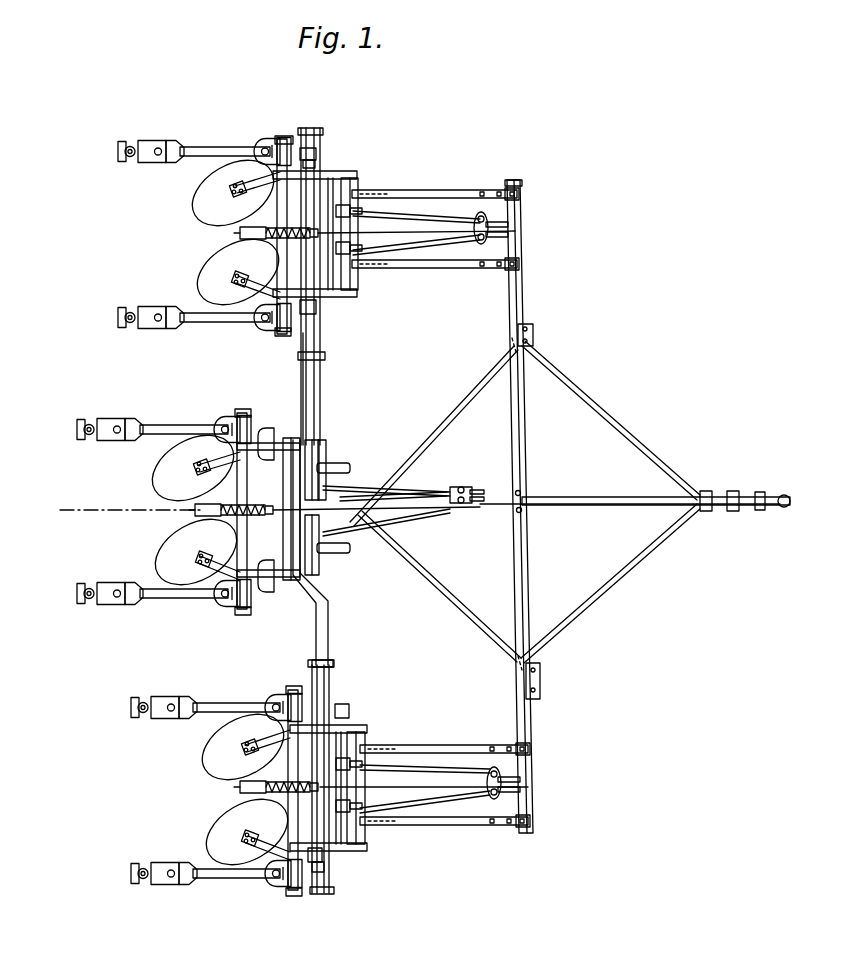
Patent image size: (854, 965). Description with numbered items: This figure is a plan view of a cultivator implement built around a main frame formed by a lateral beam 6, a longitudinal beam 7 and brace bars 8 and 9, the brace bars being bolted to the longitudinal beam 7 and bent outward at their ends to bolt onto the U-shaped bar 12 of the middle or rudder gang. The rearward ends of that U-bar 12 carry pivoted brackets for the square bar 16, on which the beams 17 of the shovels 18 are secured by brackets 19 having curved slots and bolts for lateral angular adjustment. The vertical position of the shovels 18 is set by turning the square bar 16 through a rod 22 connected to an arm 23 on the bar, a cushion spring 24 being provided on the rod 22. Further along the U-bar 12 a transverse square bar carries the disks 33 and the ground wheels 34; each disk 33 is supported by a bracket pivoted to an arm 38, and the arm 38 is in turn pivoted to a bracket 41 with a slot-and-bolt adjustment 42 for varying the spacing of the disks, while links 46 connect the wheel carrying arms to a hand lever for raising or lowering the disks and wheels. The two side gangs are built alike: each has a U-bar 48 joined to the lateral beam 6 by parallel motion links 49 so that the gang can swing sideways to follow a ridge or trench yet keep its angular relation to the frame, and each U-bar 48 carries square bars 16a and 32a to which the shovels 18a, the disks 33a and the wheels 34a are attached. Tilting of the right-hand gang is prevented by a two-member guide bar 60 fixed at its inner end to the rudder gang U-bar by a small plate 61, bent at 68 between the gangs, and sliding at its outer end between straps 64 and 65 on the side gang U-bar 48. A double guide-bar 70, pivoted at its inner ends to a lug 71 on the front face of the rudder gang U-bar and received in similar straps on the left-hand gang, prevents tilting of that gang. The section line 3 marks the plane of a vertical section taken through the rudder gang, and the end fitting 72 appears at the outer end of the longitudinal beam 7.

The section line 3— 3 is at (74, 512).
The lateral beam 6 is at (528, 412).
The longitudinal beam 7 is at (606, 497).
The brace bar 8 is at (627, 431).
The brace bar 9 is at (468, 413).
The U-shaped bar 12 is at (302, 572).
The square bar 16 is at (243, 512).
The square bar 16a is at (278, 250).
The beam 17 is at (207, 146).
The shovel 18 is at (118, 442).
The shovel 18a is at (158, 165).
The bracket 19 is at (268, 137).
The rod 22 is at (398, 227).
The arm 23 is at (238, 237).
The cushion spring 24 is at (262, 227).
The square bar 32a is at (348, 248).
The disk 33 is at (165, 476).
The disk 33a is at (205, 205).
The ground wheel 34 is at (350, 457).
The ground wheel 34a is at (388, 190).
The arm 38 is at (266, 176).
The bracket 41 is at (270, 427).
The slot-and-bolt adjustment 42 is at (310, 152).
The link 46 is at (478, 236).
The U-bar 48 is at (373, 795).
The parallel motion link 49 is at (445, 190).
The guide bar 60 is at (325, 644).
The plate 61 is at (290, 500).
The strap 64 is at (352, 172).
The strap 65 is at (364, 851).
The bend 68 is at (318, 599).
The double guide-bar 70 is at (310, 384).
The lug 71 is at (325, 470).
The ball 72 is at (784, 508).